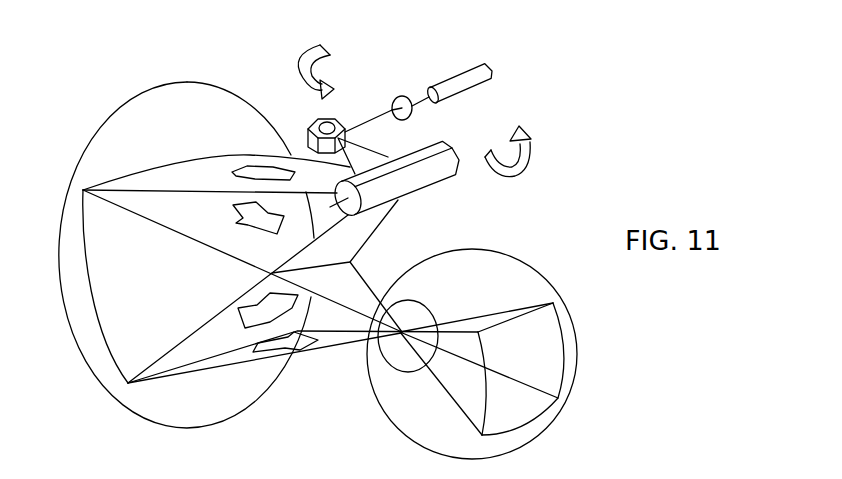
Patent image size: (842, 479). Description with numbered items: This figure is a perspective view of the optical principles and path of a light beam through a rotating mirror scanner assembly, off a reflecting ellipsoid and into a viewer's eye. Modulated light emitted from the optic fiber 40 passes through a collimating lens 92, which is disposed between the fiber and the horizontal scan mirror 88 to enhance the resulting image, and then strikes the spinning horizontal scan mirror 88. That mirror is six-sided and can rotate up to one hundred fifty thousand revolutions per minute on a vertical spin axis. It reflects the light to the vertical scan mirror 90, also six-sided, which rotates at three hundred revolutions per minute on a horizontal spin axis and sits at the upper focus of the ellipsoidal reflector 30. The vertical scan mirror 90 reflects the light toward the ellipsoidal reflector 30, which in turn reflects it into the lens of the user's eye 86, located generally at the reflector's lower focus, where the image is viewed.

The ellipsoidal reflector 30 is at (137, 100).
The horizontal scan mirror 88 is at (307, 120).
The collimating lens 92 is at (408, 97).
The optic fiber 40 is at (477, 85).
The vertical scan mirror 90 is at (438, 186).
The user's eye 86 is at (403, 358).